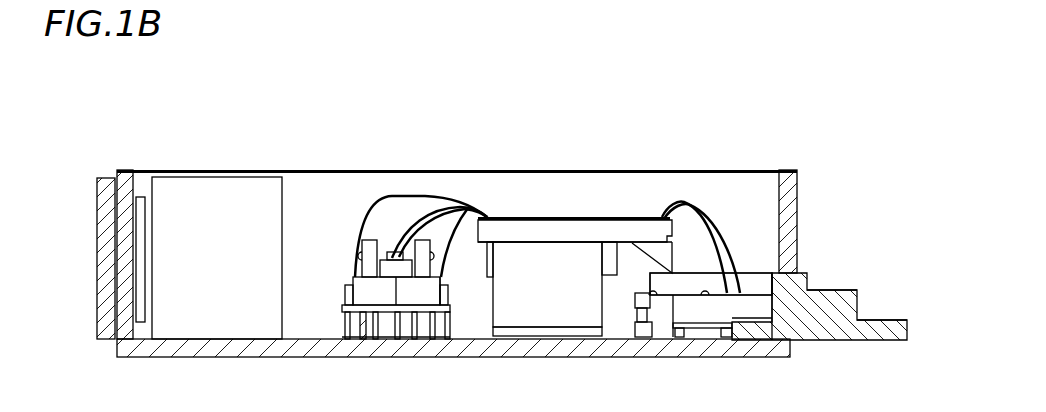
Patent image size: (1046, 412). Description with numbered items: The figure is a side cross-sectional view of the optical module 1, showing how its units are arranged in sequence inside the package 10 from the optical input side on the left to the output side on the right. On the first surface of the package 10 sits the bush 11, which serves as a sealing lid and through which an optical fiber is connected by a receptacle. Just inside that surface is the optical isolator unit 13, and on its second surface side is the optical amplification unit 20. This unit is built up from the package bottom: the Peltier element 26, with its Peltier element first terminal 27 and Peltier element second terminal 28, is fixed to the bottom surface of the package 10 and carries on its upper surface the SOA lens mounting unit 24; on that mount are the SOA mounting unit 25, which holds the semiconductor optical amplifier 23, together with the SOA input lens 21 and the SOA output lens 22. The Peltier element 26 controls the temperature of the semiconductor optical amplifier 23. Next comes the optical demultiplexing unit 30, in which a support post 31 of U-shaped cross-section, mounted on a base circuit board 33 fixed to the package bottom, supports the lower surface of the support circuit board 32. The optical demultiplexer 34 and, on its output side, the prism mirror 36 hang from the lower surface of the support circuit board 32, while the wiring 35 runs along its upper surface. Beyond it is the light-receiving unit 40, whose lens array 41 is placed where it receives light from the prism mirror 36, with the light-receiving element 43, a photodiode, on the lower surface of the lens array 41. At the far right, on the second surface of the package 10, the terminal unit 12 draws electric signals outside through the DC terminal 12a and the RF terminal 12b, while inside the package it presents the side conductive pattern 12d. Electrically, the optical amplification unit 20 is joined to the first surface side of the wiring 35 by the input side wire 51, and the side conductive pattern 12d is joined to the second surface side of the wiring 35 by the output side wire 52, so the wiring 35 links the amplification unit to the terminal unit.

The optical module 1 is at (302, 137).
The package 10 is at (140, 348).
The bush 11 is at (102, 257).
The terminal unit 12 is at (825, 273).
The DC terminal 12a is at (840, 288).
The RF terminal 12b is at (882, 320).
The side conductive pattern 12d is at (715, 300).
The optical isolator unit 13 is at (202, 300).
The optical amplification unit 20 is at (390, 222).
The SOA input lens 21 is at (352, 250).
The SOA output lens 22 is at (422, 267).
The semiconductor optical amplifier 23 is at (410, 253).
The SOA lens mounting unit 24 is at (375, 298).
The SOA mounting unit 25 is at (400, 268).
The Peltier element 26 is at (346, 324).
The Peltier element first terminal 27 is at (345, 297).
The Peltier element second terminal 28 is at (448, 297).
The optical demultiplexing unit 30 is at (583, 207).
The support post 31 is at (565, 297).
The support circuit board 32 is at (512, 232).
The base circuit board 33 is at (525, 335).
The optical demultiplexer 34 is at (607, 275).
The wiring 35 is at (555, 217).
The prism mirror 36 is at (658, 250).
The light-receiving unit 40 is at (752, 232).
The lens array 41 is at (650, 310).
The light-receiving element 43 is at (668, 328).
The input side wire 51 is at (440, 197).
The output side wire 52 is at (712, 210).